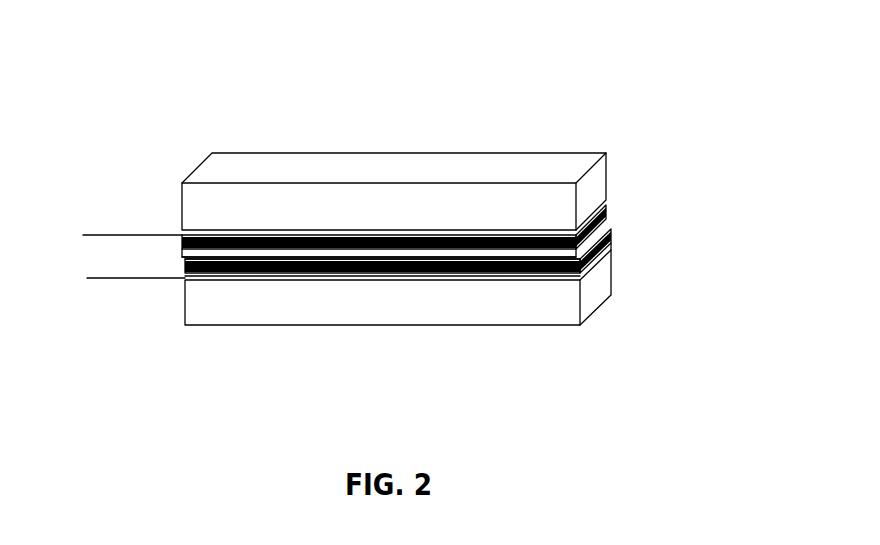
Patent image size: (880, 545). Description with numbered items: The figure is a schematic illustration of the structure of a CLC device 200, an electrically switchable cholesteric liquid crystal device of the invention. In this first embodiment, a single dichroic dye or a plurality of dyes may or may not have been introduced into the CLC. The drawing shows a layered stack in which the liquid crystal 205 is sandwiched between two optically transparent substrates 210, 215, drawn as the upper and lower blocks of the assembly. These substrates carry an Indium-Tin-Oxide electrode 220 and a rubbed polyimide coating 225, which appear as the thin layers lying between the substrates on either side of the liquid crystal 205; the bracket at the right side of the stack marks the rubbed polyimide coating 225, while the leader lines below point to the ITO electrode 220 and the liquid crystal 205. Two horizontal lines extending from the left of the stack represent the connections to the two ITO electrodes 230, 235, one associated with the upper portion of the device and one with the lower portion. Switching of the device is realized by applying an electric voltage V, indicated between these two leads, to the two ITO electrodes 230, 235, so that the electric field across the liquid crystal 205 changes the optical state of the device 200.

The CLC device 200 is at (435, 133).
The liquid crystal 205 is at (407, 254).
The optically transparent substrate 210 is at (597, 183).
The optically transparent substrate 215 is at (526, 303).
The Indium-Tin-Oxide electrode 220 is at (255, 232).
The rubbed polyimide coating 225 is at (460, 307).
The ITO electrode 230 is at (123, 278).
The ITO electrode 235 is at (128, 234).
The electric voltage V is at (52, 262).